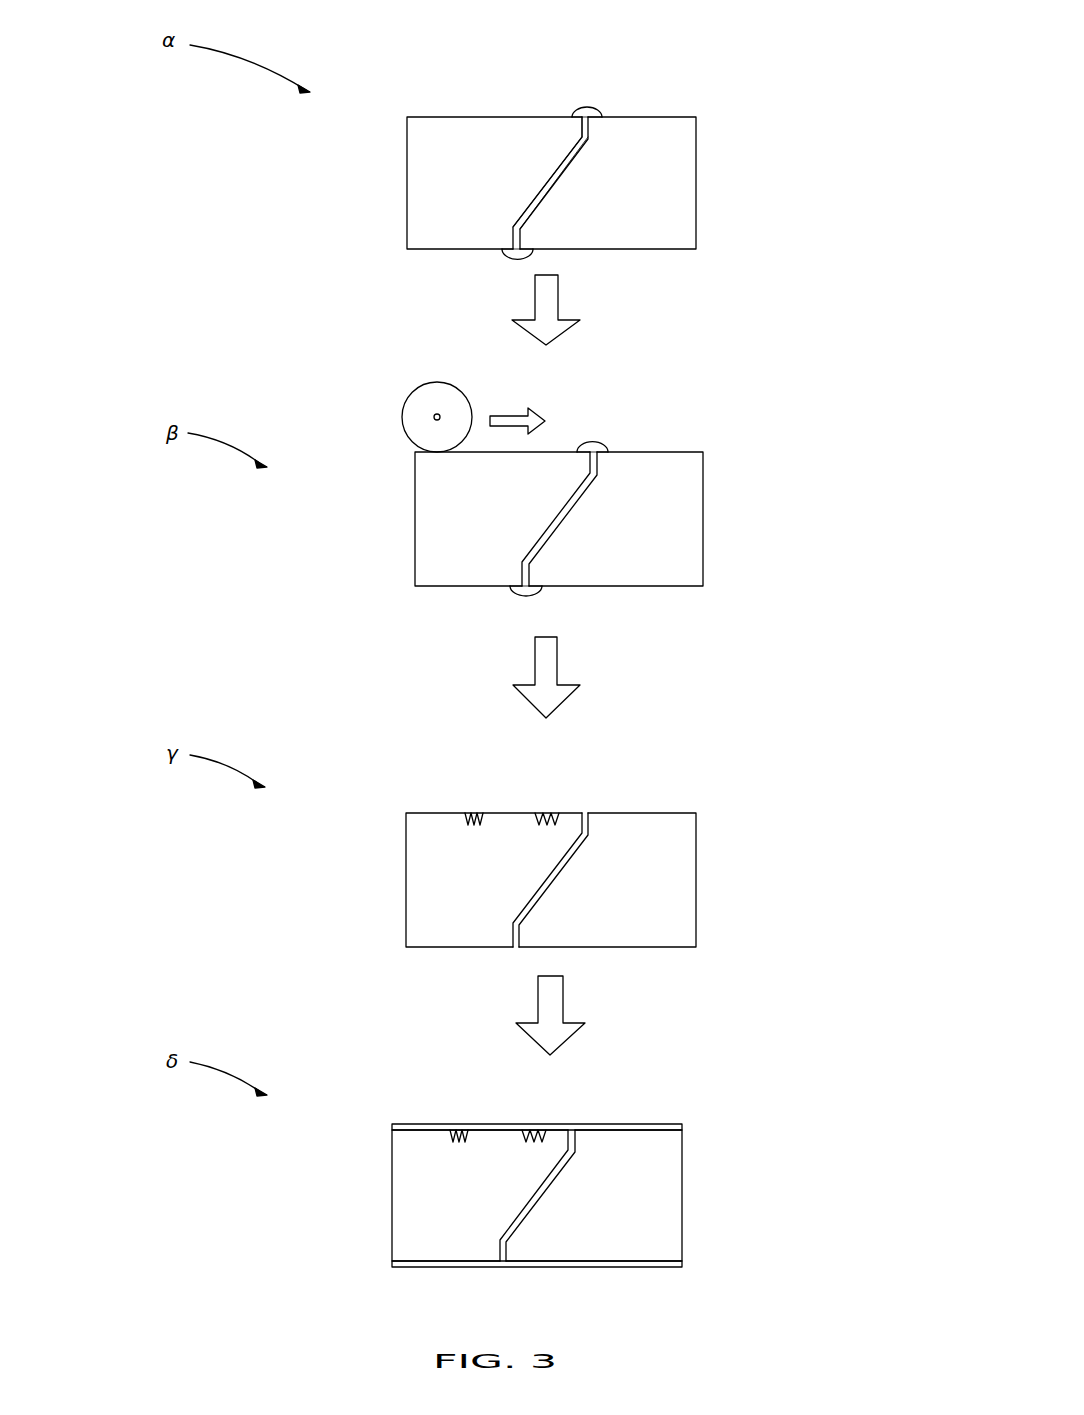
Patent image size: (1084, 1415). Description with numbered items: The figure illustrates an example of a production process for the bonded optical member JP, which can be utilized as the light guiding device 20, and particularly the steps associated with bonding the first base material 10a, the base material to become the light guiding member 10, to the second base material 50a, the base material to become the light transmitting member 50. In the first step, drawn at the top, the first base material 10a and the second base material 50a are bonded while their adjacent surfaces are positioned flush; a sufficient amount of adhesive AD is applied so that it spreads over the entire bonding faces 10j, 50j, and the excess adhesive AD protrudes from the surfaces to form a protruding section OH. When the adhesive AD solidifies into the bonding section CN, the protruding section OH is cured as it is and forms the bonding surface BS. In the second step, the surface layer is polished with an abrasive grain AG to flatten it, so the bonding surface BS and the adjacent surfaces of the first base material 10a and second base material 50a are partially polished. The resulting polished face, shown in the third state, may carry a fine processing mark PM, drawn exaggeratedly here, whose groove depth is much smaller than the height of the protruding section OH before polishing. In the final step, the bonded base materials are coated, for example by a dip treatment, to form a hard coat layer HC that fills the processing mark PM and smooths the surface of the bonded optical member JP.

The first base material 10a is at (670, 689).
The light guiding member 10 is at (797, 228).
The second base material 50a is at (436, 689).
The light transmitting member 50 is at (306, 226).
The bonding face 10j is at (557, 167).
The bonding face 50j is at (540, 207).
The bonded optical member JP is at (636, 76).
The light guiding device 20 is at (611, 92).
The adhesive AD is at (665, 689).
The bonding section CN is at (568, 865).
The bonding surface BS is at (580, 106).
The protruding section OH is at (600, 113).
The abrasive grain AG is at (420, 407).
The processing mark PM is at (460, 807).
The hard coat layer HC is at (613, 1125).